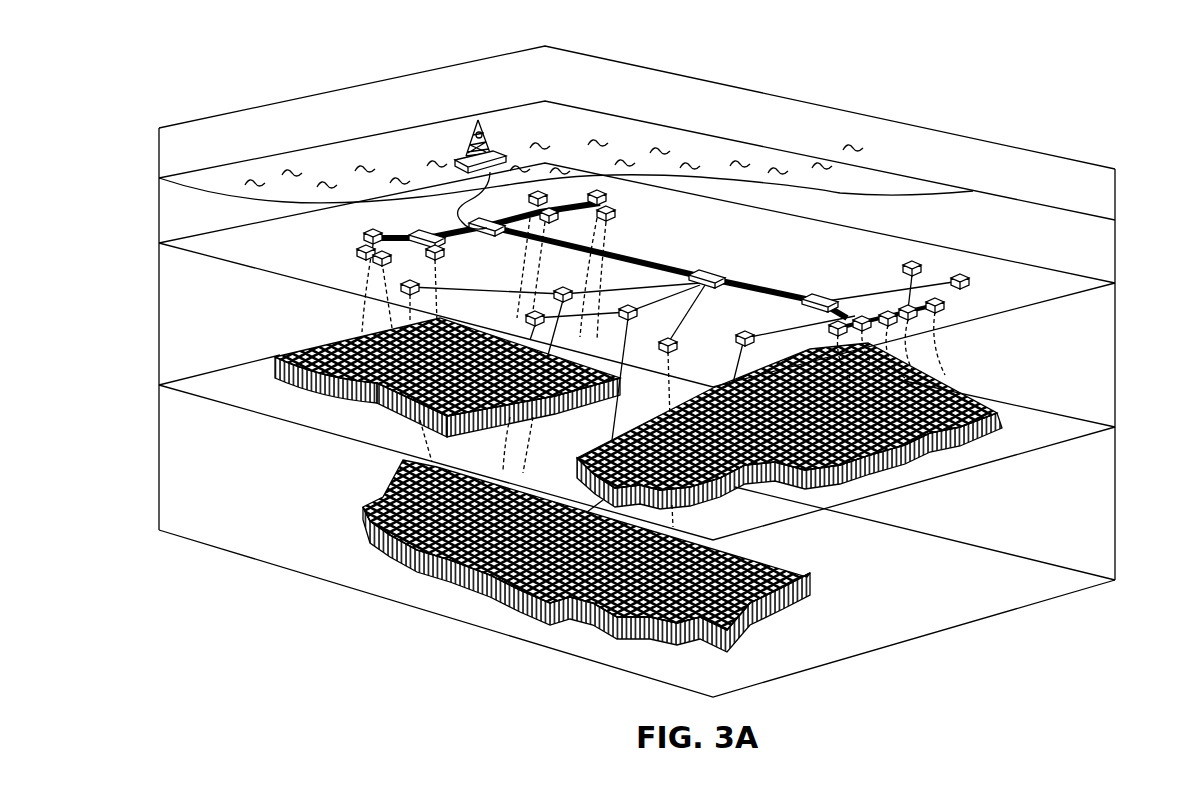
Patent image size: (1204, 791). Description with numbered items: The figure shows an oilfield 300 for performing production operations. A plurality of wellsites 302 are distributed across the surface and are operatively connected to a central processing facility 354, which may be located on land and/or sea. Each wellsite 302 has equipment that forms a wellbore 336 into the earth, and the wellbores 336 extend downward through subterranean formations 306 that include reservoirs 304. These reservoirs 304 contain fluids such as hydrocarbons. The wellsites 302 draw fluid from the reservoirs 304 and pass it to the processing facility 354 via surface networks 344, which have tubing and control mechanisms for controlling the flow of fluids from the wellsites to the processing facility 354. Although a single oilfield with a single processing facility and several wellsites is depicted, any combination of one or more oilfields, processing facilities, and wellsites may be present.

The oilfield 300 is at (670, 371).
The wellsites 302 is at (667, 271).
The reservoirs 304 is at (906, 487).
The subterranean formations 306 is at (1125, 283).
The wellbore 336 is at (958, 342).
The surface networks 344 is at (401, 251).
The central processing facility 354 is at (468, 133).